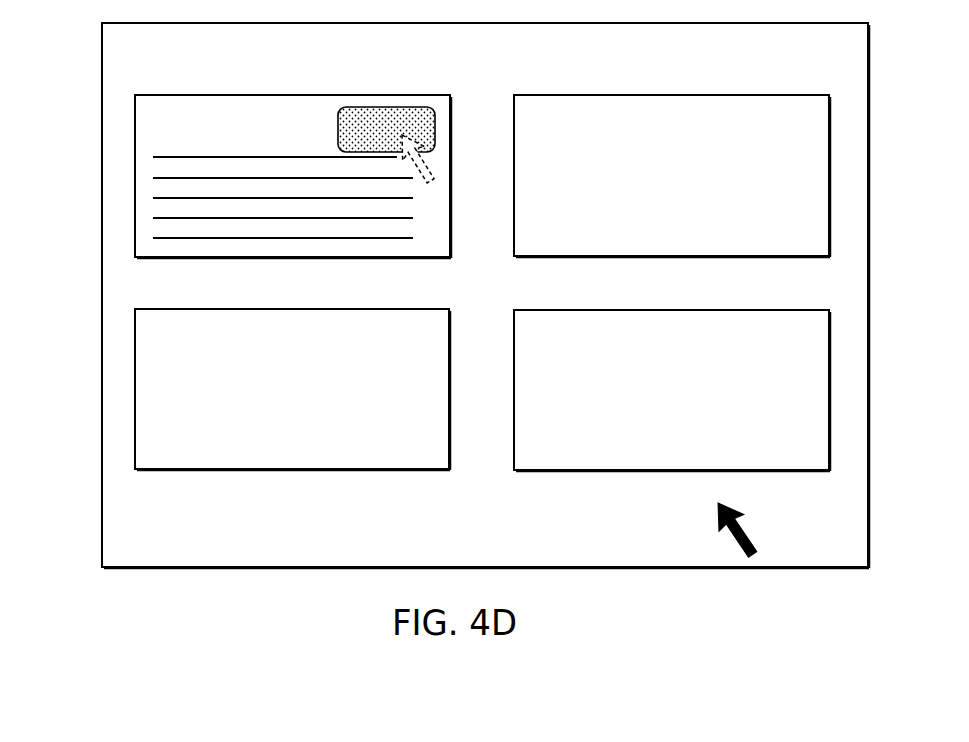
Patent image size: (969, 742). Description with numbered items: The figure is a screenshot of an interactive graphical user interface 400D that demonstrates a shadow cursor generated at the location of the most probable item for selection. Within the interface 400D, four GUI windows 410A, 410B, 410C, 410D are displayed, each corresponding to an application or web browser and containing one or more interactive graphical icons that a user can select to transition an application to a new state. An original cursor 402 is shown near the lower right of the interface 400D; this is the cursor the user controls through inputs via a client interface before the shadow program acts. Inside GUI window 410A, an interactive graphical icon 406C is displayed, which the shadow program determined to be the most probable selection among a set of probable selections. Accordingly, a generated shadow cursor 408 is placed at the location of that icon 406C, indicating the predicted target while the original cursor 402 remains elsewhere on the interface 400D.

The interactive graphical user interface 400D is at (168, 578).
The original cursor 402 is at (729, 511).
The interactive graphical icon 406C is at (378, 107).
The generated shadow cursor 408 is at (430, 163).
The GUI window 410A is at (238, 95).
The GUI window 410B is at (618, 95).
The GUI window 410C is at (237, 309).
The GUI window 410D is at (617, 310).